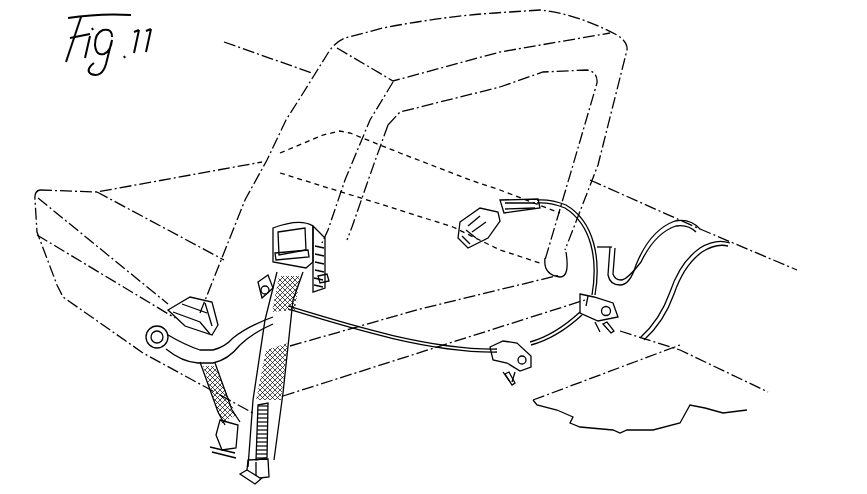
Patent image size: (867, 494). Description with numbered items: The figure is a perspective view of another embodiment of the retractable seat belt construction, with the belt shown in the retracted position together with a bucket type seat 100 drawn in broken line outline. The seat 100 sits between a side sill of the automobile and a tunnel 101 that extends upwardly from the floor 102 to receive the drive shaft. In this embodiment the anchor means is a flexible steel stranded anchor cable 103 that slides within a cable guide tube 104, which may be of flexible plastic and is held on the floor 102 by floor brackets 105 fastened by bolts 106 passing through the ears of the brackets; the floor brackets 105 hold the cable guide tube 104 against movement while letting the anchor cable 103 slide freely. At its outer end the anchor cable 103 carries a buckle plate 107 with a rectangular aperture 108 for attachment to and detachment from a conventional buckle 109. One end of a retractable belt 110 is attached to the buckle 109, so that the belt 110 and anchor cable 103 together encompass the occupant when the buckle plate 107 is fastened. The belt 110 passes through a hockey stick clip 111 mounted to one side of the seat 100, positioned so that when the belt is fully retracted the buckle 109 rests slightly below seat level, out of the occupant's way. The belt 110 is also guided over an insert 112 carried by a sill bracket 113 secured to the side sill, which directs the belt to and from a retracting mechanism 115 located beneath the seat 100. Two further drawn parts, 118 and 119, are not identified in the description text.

The seat 100 is at (654, 66).
The tunnel 101 is at (745, 260).
The floor 102 is at (735, 412).
The anchor cable 103 is at (548, 343).
The cable guide tube 104 is at (462, 352).
The floor brackets 105 is at (582, 299).
The bolts 106 is at (512, 380).
The buckle plate 107 is at (478, 208).
The rectangular aperture 108 is at (466, 220).
The buckle 109 is at (195, 281).
The retractable belt 110 is at (288, 347).
The hockey stick clip 111 is at (181, 357).
The insert 112 is at (270, 408).
The sill bracket 113 is at (270, 437).
The retracting mechanism 115 is at (341, 246).
The retractor 118 is at (276, 216).
The pawl 119 is at (338, 282).